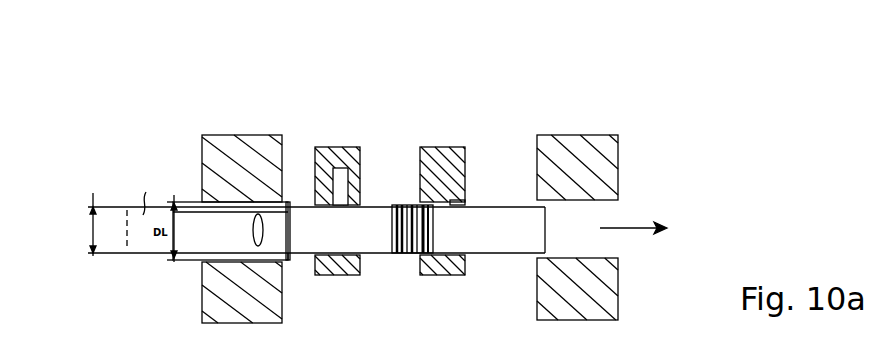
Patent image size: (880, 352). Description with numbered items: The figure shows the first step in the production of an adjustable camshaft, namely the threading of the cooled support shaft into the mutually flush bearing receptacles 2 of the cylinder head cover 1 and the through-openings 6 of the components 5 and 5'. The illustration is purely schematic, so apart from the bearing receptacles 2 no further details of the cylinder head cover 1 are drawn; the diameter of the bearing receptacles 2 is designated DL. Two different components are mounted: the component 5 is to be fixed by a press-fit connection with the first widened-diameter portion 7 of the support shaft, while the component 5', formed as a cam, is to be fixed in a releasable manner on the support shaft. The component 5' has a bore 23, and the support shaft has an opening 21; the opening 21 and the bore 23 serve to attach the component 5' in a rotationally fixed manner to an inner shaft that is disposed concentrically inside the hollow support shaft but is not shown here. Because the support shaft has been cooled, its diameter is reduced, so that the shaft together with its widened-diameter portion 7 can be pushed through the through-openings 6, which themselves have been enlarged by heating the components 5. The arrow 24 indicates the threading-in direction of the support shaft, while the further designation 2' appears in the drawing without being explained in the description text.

The cylinder head cover 1 is at (268, 312).
The bearing receptacle 2 is at (476, 225).
The plate 2' is at (325, 302).
The component 5 is at (460, 202).
The component 5' is at (337, 157).
The through-opening 6 is at (463, 203).
The widened-diameter portion 7 is at (405, 207).
The opening 21 is at (258, 214).
The bore 23 is at (336, 170).
The arrow 24 is at (657, 227).